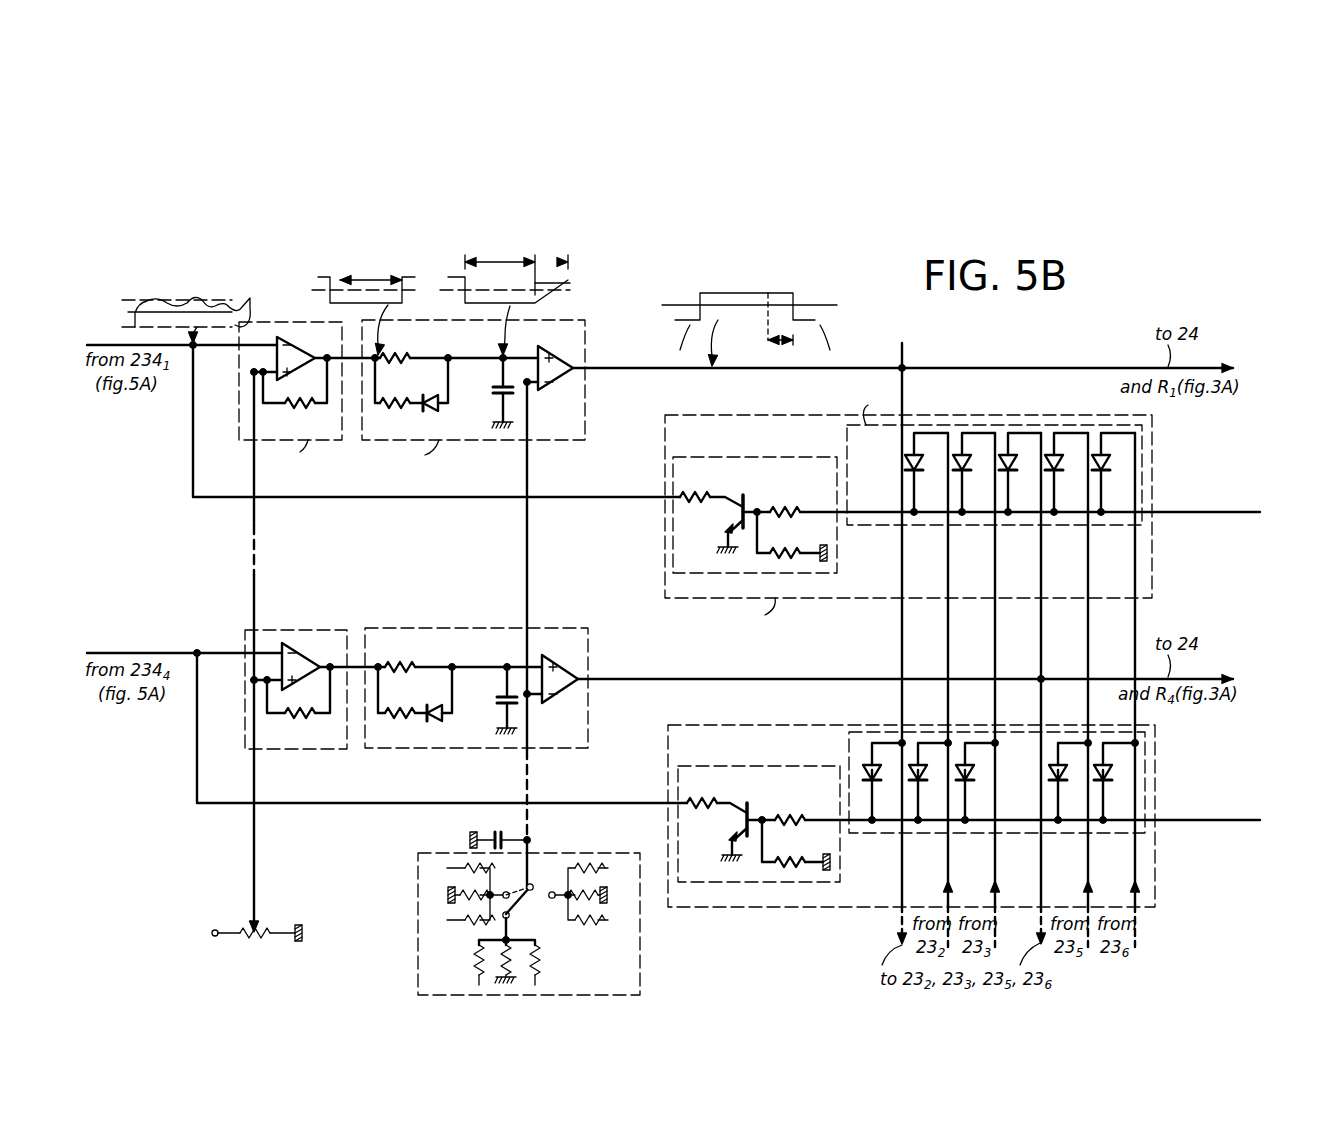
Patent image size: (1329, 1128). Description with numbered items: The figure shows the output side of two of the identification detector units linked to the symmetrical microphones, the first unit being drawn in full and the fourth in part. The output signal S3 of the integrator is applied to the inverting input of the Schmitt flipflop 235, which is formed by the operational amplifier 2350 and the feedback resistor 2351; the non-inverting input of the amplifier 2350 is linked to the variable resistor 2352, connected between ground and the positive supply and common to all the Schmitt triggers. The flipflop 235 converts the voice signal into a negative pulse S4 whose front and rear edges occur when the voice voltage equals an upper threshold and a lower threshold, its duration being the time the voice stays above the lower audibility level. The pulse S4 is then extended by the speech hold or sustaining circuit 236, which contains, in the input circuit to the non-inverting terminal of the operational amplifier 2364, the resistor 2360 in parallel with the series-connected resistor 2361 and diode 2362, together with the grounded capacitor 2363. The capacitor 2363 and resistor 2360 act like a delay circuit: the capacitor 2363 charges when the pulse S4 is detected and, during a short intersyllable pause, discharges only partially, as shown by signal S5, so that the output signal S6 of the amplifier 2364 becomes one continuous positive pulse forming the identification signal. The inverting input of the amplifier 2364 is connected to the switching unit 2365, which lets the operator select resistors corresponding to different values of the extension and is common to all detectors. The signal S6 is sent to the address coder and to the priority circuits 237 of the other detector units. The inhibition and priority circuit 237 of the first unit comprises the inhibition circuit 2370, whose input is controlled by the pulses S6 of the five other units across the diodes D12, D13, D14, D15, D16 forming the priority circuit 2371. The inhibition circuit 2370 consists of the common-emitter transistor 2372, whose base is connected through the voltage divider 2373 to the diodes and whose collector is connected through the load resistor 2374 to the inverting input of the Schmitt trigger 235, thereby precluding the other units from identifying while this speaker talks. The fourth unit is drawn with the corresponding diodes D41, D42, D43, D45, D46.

The Schmitt flipflop 235 is at (258, 318).
The operational amplifier 2350 is at (298, 355).
The feedback resistor 2351 is at (304, 406).
The variable resistor 2352 is at (256, 945).
The speech hold or sustaining circuit 236 is at (585, 348).
The resistor 2360 is at (393, 357).
The resistor 2361 is at (394, 404).
The diode 2362 is at (440, 404).
The grounded capacitor 2363 is at (495, 394).
The operational amplifier 2364 is at (565, 382).
The switching unit 2365 is at (418, 902).
The inhibition and priority circuit 237 is at (712, 403).
The inhibition circuit 2370 is at (755, 453).
The priority circuit 2371 is at (880, 525).
The common-emitter transistor 2372 is at (736, 515).
The voltage divider 2373 is at (784, 548).
The load resistor 2374 is at (696, 484).
The output signal of integrator S3 is at (176, 297).
The negative pulse S4 is at (385, 276).
The capacitor discharge signal S5 is at (562, 276).
The identification signal S6 is at (788, 282).
The diode D12 is at (925, 463).
The diode D13 is at (973, 463).
The diode D14 is at (1019, 463).
The diode D15 is at (1065, 463).
The diode D16 is at (1112, 463).
The diode D41 is at (883, 773).
The diode D42 is at (929, 773).
The diode D43 is at (976, 773).
The diode D45 is at (1069, 773).
The diode D46 is at (1114, 773).